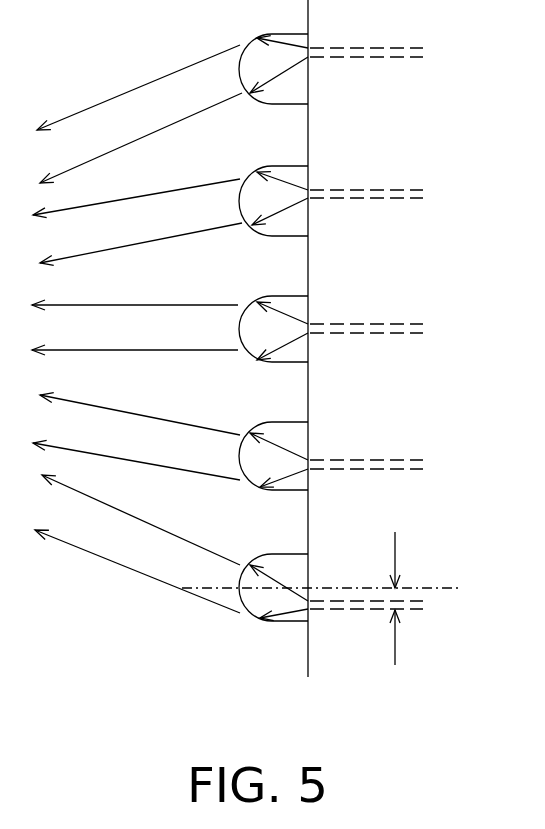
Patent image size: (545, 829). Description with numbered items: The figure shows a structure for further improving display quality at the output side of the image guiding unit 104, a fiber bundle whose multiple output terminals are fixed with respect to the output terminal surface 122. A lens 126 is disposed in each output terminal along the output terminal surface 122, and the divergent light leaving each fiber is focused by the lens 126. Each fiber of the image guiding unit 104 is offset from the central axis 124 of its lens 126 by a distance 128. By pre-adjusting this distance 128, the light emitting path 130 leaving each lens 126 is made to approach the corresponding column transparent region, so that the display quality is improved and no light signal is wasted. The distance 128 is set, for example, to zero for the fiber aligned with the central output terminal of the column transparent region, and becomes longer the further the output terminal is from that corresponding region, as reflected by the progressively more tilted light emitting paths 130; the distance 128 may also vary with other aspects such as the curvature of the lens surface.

The image guiding unit 104 is at (394, 457).
The output terminal surface 122 is at (310, 658).
The central axis 124 is at (462, 588).
The lens 126 is at (277, 625).
The distance 128 is at (395, 555).
The light emitting path 130 is at (128, 572).